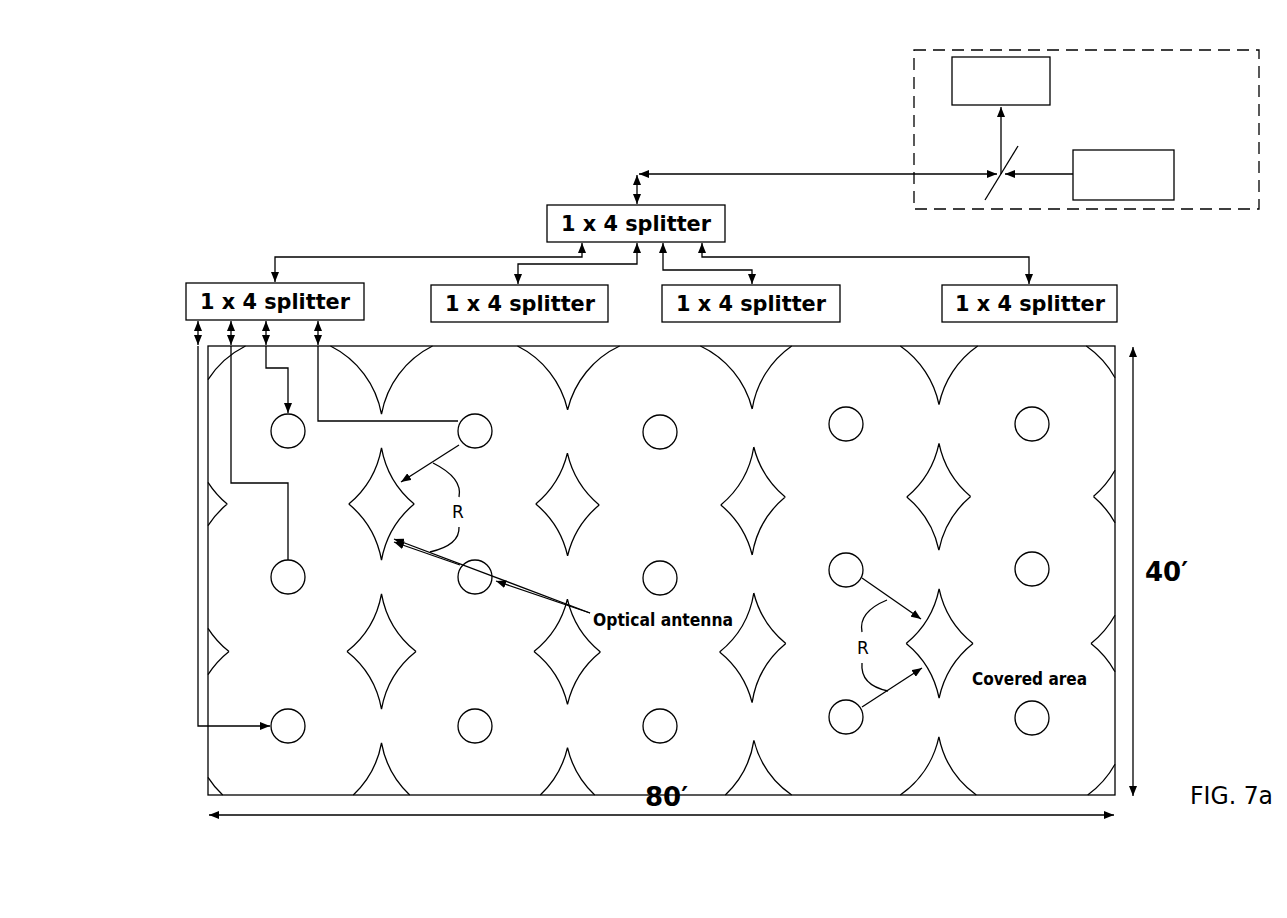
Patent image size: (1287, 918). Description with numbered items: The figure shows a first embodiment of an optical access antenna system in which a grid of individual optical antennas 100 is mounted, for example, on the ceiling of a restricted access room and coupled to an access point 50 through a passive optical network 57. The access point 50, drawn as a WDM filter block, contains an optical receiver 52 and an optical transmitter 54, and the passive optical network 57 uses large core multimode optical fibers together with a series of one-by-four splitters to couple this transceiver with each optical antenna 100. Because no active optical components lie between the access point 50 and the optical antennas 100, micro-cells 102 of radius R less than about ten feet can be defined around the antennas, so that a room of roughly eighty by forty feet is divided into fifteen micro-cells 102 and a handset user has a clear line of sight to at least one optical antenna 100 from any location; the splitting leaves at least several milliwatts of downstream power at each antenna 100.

The integrated RF and FSO network access point 50 is at (913, 84).
The optical receiver 52 is at (1050, 80).
The optical transmitter 54 is at (1174, 173).
The passive optical network 57 is at (705, 168).
The optical antenna 100 is at (288, 448).
The micro-cell 102 is at (488, 392).